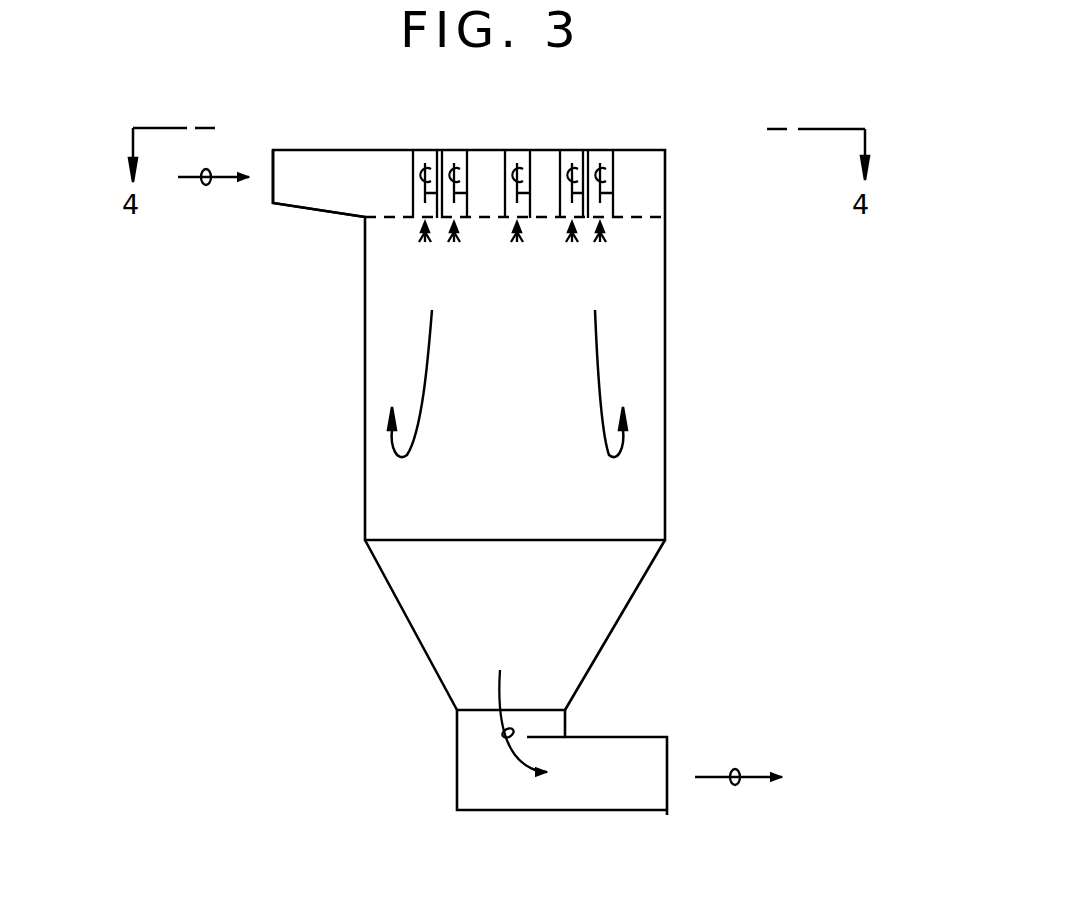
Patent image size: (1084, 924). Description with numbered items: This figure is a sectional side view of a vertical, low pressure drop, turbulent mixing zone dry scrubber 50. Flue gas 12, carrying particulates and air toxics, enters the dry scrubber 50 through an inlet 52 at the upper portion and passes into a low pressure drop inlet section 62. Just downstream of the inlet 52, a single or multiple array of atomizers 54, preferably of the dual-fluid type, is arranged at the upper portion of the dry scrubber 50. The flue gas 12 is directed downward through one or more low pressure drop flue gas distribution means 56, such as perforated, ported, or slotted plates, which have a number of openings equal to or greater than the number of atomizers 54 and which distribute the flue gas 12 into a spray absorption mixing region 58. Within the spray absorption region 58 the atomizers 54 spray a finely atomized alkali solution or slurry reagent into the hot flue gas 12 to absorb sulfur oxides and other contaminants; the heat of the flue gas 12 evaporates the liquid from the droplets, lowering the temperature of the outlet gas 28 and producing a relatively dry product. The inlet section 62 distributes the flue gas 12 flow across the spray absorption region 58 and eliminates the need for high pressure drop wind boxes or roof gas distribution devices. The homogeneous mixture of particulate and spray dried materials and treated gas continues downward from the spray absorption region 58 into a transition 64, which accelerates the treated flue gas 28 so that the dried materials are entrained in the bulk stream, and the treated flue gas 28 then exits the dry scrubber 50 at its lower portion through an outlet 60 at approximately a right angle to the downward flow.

The flue gas 12 is at (206, 185).
The treated flue gas 28 is at (503, 737).
The dry scrubber 50 is at (737, 454).
The inlet 52 is at (322, 195).
The atomizers 54 is at (600, 143).
The flue gas distribution means 56 is at (647, 220).
The spray absorption mixing region 58 is at (523, 412).
The outlet 60 is at (608, 752).
The low pressure drop inlet section 62 is at (643, 167).
The transition 64 is at (435, 623).